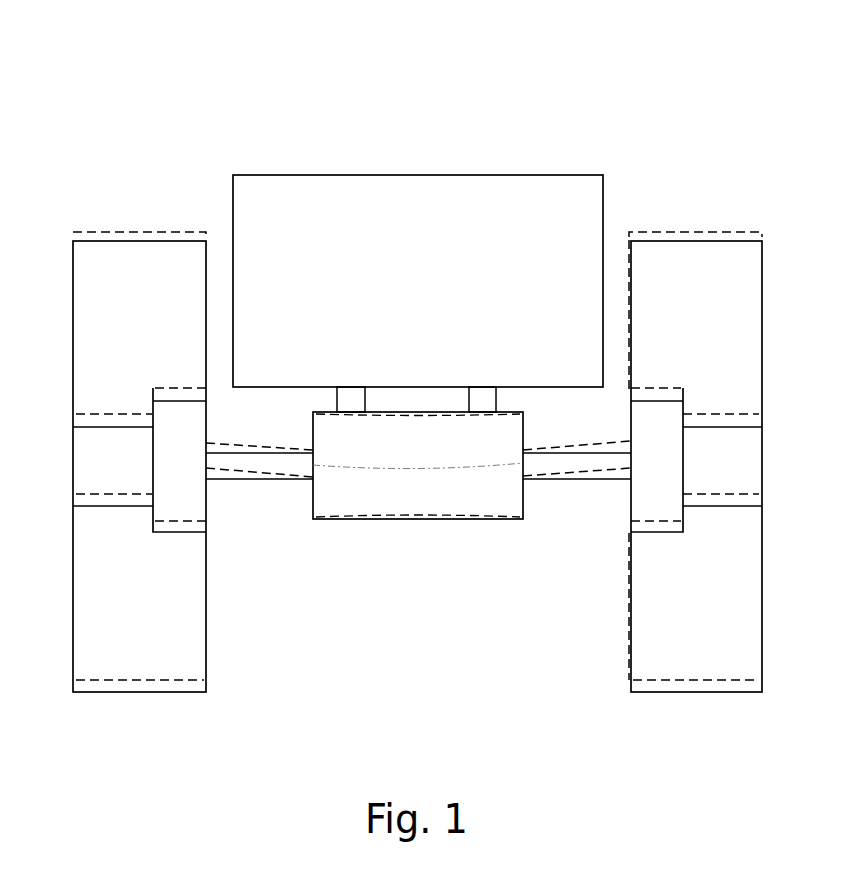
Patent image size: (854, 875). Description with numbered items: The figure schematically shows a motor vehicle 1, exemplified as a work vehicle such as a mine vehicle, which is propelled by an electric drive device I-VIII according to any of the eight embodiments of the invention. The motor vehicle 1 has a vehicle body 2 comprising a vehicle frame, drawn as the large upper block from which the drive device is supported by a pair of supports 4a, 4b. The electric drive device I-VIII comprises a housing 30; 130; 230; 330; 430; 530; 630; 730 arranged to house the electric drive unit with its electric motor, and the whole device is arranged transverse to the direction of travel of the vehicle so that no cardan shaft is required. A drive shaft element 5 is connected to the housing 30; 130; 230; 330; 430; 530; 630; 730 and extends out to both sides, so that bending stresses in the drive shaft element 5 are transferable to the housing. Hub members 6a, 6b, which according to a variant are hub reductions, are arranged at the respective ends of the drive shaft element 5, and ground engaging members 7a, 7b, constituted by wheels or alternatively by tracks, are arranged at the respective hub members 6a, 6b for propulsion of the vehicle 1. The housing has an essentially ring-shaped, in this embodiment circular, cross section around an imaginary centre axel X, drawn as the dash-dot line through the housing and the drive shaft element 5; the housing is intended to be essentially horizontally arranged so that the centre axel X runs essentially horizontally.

The motor vehicle 1 is at (416, 411).
The vehicle body 2 is at (415, 175).
The left support 4a is at (337, 401).
The right support 4b is at (496, 401).
The drive shaft element 5 is at (227, 479).
The hub member 6a is at (140, 514).
The hub member 6b is at (692, 514).
The ground engaging member 7a is at (138, 703).
The ground engaging member 7b is at (695, 703).
The housing 30 is at (418, 541).
The housing 130 is at (418, 541).
The housing 230 is at (418, 541).
The housing 330 is at (418, 541).
The housing 430 is at (418, 541).
The housing 530 is at (418, 541).
The housing 630 is at (418, 541).
The housing 730 is at (418, 541).
The electric drive device I-VIII is at (429, 510).
The centre axel X is at (537, 467).